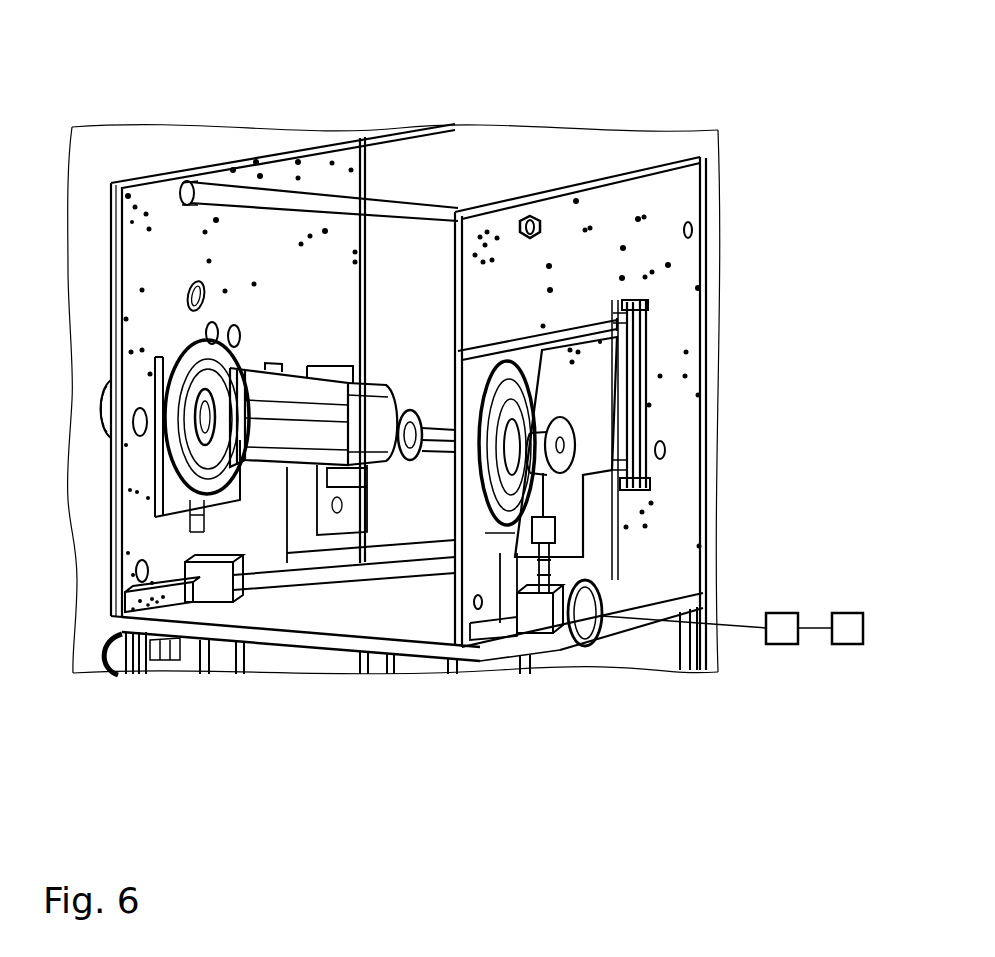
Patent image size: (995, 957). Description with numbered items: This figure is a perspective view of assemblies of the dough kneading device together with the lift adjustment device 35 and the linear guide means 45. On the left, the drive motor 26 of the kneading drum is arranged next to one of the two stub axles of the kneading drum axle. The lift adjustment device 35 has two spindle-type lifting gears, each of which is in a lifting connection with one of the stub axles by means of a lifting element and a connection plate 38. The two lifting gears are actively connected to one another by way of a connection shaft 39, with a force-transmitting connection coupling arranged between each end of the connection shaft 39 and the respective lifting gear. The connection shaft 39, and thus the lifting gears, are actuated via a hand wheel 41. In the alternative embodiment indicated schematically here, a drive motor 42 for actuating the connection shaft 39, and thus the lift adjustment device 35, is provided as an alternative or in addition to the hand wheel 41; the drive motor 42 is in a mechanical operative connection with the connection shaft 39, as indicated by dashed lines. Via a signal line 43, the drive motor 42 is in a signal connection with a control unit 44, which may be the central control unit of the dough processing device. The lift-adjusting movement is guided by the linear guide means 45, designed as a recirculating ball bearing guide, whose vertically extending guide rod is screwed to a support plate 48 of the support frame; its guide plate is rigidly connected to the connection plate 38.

The drive motor 26 is at (278, 432).
The lift adjustment device 35 is at (575, 650).
The connection plate 38 is at (590, 348).
The connection shaft 39 is at (360, 597).
The hand wheel 41 is at (589, 646).
The drive motor 42 is at (780, 612).
The signal line 43 is at (814, 630).
The control unit 44 is at (847, 612).
The linear guide means 45 is at (648, 347).
The support plate 48 is at (688, 267).